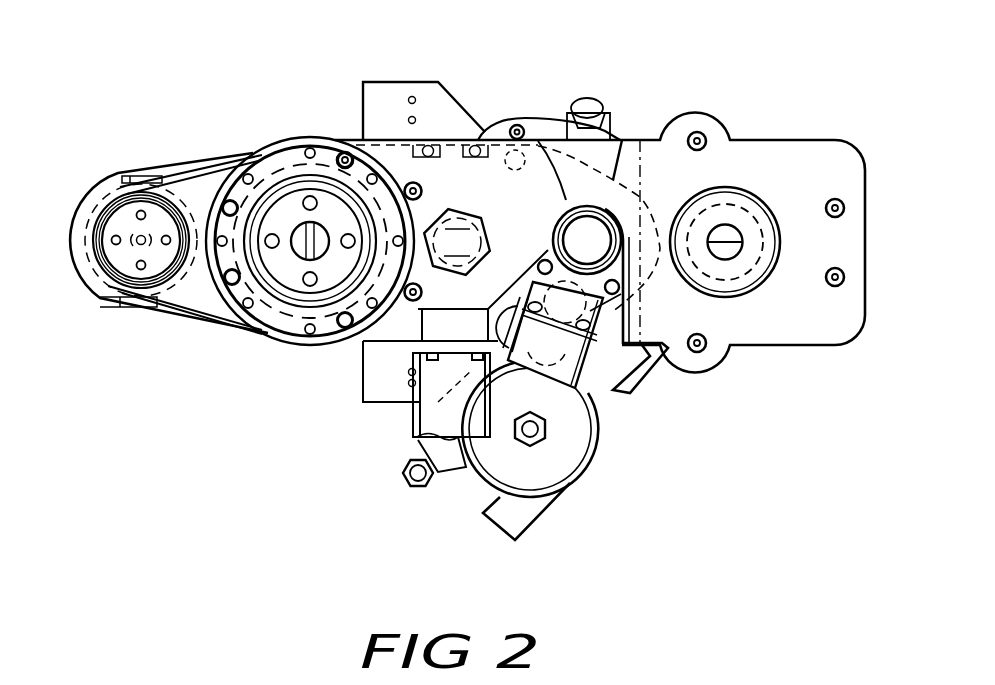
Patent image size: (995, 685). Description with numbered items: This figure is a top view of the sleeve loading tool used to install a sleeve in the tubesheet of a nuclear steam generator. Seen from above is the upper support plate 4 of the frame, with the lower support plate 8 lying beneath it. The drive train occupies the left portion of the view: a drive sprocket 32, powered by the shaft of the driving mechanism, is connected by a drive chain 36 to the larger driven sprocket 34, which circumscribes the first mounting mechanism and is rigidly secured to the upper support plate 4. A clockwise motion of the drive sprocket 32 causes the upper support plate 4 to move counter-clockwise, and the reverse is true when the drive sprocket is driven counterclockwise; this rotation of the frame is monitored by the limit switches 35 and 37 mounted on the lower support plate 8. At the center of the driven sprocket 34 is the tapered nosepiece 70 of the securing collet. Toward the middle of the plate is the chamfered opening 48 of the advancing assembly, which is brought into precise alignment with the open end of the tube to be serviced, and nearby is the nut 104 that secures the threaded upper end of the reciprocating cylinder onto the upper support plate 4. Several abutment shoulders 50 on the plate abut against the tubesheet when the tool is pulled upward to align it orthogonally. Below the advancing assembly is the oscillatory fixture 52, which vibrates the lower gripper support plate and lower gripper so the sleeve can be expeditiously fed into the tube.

The upper support plate 4 is at (832, 140).
The lower support plate 8 is at (615, 177).
The drive sprocket 32 is at (110, 213).
The driven sprocket 34 is at (262, 150).
The limit switch 35 is at (397, 82).
The drive chain 36 is at (205, 316).
The limit switch 37 is at (387, 401).
The chamfered opening 48 is at (570, 208).
The abutment shoulders 50 is at (346, 150).
The oscillatory fixture 52 is at (597, 453).
The tapered nosepiece 70 is at (295, 257).
The nut 104 is at (465, 209).